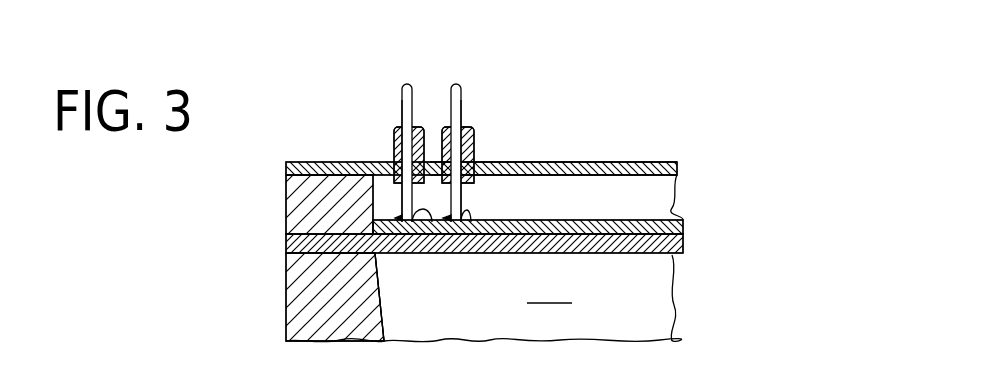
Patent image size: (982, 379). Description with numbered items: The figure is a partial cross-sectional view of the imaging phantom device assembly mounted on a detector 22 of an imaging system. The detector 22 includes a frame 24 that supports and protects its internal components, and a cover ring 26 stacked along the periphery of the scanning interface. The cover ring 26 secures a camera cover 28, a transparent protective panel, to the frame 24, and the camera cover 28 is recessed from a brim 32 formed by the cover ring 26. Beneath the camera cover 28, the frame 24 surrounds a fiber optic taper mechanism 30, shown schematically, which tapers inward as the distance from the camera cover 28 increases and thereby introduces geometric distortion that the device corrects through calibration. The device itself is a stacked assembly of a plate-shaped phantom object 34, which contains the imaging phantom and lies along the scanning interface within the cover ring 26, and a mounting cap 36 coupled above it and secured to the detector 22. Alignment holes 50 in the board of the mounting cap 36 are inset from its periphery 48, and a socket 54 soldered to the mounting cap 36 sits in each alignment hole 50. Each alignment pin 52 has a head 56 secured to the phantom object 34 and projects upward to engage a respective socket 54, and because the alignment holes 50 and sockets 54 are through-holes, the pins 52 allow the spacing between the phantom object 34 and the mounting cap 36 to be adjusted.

The detector 22 is at (286, 318).
The frame 24 is at (286, 293).
The cover ring 26 is at (286, 200).
The camera cover 28 is at (684, 245).
The fiber optic taper mechanism 30 is at (528, 297).
The brim 32 is at (300, 162).
The phantom object 34 is at (683, 222).
The mounting cap 36 is at (597, 162).
The periphery 48 is at (283, 180).
The alignment hole 50 is at (395, 152).
The alignment pin 52 is at (407, 84).
The socket 54 is at (401, 130).
The head 56 is at (471, 217).